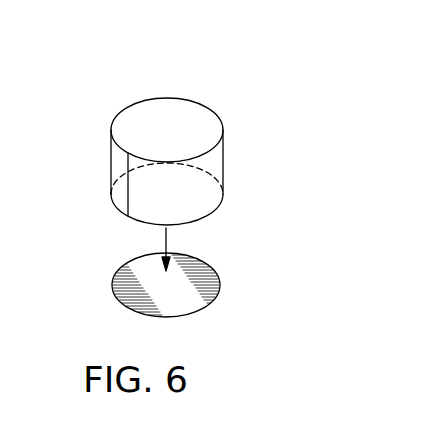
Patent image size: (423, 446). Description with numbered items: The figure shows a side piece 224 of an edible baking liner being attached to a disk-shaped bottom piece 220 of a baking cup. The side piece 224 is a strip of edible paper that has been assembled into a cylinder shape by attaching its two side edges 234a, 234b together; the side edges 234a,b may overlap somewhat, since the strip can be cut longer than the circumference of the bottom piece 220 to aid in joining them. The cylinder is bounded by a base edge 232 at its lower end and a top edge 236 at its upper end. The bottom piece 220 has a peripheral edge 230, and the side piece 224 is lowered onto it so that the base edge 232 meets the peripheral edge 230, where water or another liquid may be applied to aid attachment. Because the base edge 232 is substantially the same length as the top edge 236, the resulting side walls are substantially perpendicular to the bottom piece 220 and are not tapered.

The bottom piece 220 is at (178, 296).
The side piece 224 is at (152, 137).
The peripheral edge 230 is at (199, 302).
The base edge 232 is at (150, 183).
The side edges 234a,b is at (70, 192).
The side edge 234a is at (70, 192).
The side edge 234b is at (121, 198).
The top edge 236 is at (180, 98).